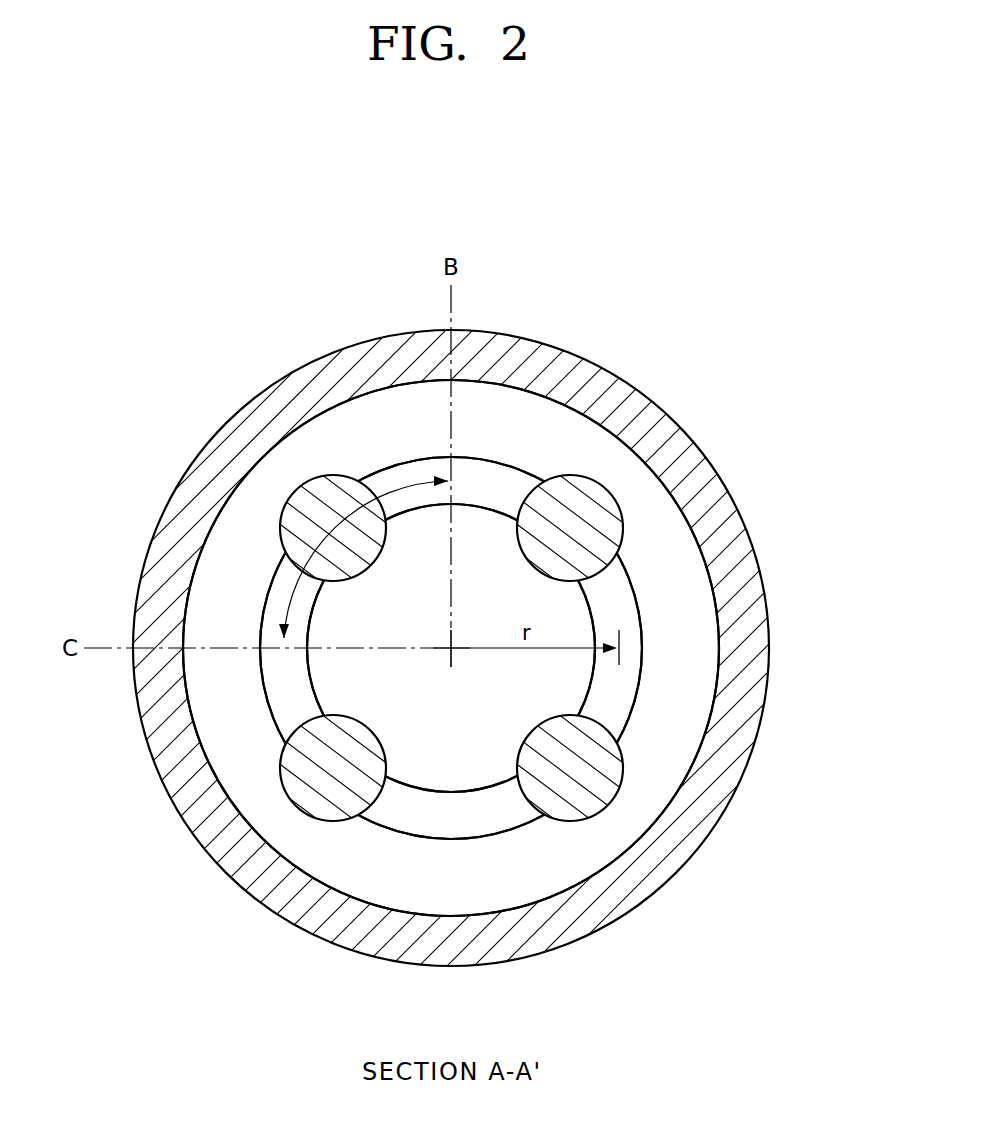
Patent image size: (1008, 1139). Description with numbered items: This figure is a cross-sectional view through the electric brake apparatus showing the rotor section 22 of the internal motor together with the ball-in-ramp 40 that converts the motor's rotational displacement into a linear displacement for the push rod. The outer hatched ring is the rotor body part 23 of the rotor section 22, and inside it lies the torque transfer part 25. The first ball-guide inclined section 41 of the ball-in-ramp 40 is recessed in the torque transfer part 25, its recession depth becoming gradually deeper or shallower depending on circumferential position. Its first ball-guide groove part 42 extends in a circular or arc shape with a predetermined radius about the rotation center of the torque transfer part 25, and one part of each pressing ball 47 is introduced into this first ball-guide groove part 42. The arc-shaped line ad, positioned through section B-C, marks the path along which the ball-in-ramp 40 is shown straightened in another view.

The rotor section 22 is at (762, 558).
The rotor body part 23 is at (738, 660).
The torque transfer part 25 is at (518, 413).
The ball-in-ramp 40 is at (633, 578).
The first ball-guide inclined section 41 is at (617, 693).
The first ball-guide groove part 42 is at (451, 648).
The pressing ball 47 is at (597, 798).
The arc-shaped line ad is at (327, 523).